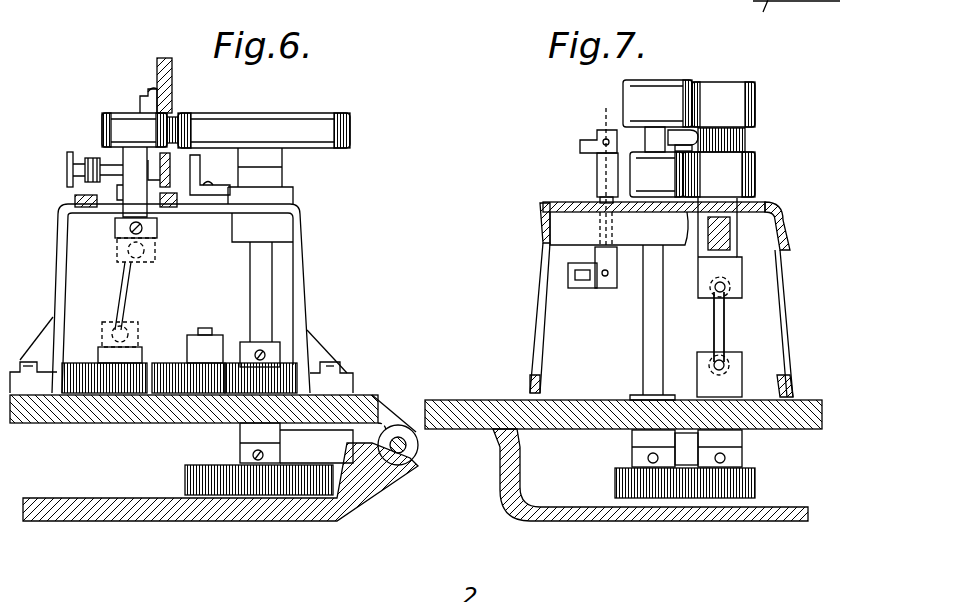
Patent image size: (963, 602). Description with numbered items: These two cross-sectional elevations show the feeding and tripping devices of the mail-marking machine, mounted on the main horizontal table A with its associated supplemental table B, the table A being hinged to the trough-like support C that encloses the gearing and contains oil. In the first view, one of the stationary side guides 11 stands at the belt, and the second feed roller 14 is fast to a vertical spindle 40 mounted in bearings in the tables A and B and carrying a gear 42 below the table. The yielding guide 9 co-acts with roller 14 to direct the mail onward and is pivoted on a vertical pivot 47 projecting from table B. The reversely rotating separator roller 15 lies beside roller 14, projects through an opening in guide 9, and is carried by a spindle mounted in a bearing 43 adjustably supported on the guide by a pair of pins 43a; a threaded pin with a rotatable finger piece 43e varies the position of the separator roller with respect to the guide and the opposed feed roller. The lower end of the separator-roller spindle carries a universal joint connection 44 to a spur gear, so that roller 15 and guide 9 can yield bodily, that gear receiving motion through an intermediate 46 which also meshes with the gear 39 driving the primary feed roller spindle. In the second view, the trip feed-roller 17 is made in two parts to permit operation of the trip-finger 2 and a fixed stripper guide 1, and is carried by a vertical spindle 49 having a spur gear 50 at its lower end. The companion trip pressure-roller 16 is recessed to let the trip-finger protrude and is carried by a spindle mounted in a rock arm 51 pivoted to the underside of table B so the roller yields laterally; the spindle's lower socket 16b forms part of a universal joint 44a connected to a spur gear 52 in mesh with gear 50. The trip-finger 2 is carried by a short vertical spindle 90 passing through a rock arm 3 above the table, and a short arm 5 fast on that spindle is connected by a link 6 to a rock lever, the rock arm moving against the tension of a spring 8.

In FIG. 7, the stripper guide 1 is at (675, 149).
In FIG. 7, the trip-finger 2 is at (625, 137).
In FIG. 7, the rock arm 3 is at (597, 165).
In FIG. 7, the short arm 5 is at (592, 285).
In FIG. 7, the link 6 is at (572, 285).
In FIG. 7, the spring 8 is at (603, 300).
In FIG. 6, the yielding guide 9 is at (172, 82).
In FIG. 6, the stationary side guide 11 is at (297, 370).
In FIG. 6, the second feed roller 14 is at (278, 128).
In FIG. 6, the reversely rotating separator roller 15 is at (125, 125).
In FIG. 7, the trip pressure-roller 16 is at (719, 139).
In FIG. 7, the socket of universal joint 16b is at (735, 271).
In FIG. 7, the trip feed-roller 17 is at (657, 103).
In FIG. 7, the gear 39 is at (796, 19).
In FIG. 6, the vertical spindle 40 is at (257, 291).
In FIG. 6, the gear 42 is at (302, 466).
In FIG. 6, the bearing 43 is at (128, 158).
In FIG. 6, the pins 43a is at (112, 173).
In FIG. 6, the rotatable finger piece 43e is at (68, 170).
In FIG. 6, the universal joint connection 44 is at (126, 286).
In FIG. 7, the universal joint connection 44 is at (719, 327).
In FIG. 7, the universal joint 44a is at (720, 332).
In FIG. 6, the intermediate gear 46 is at (168, 370).
In FIG. 6, the vertical pivot 47 is at (150, 90).
In FIG. 7, the vertical spindle 49 is at (648, 315).
In FIG. 7, the spur gear 50 is at (654, 464).
In FIG. 7, the rock arm 51 is at (733, 227).
In FIG. 7, the spur gear 52 is at (770, 479).
In FIG. 7, the short vertical spindle 90 is at (600, 200).
In FIG. 6, the main horizontal table A is at (108, 416).
In FIG. 7, the main horizontal table A is at (502, 401).
In FIG. 6, the supplemental table B is at (202, 204).
In FIG. 7, the supplemental table B is at (540, 203).
In FIG. 6, the trough-like support C is at (108, 506).
In FIG. 7, the trough-like support C is at (628, 512).